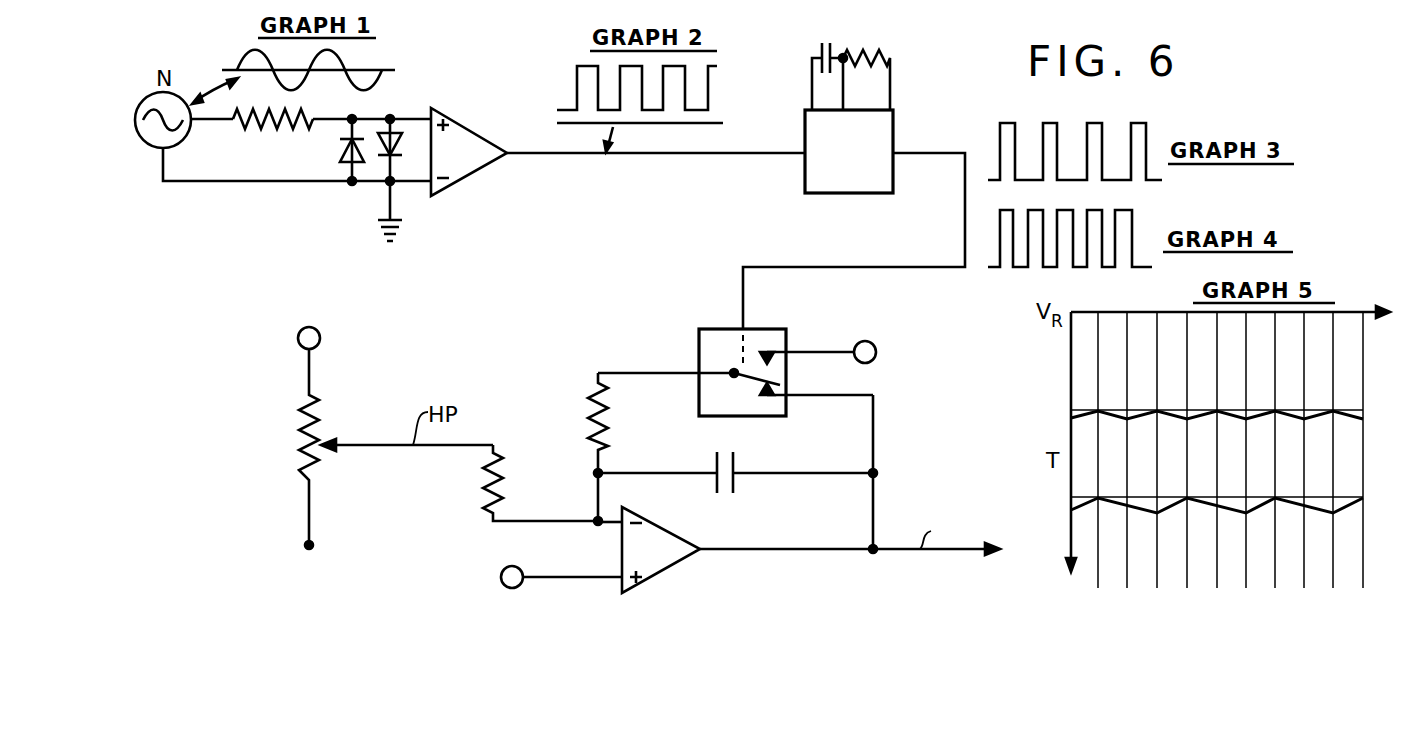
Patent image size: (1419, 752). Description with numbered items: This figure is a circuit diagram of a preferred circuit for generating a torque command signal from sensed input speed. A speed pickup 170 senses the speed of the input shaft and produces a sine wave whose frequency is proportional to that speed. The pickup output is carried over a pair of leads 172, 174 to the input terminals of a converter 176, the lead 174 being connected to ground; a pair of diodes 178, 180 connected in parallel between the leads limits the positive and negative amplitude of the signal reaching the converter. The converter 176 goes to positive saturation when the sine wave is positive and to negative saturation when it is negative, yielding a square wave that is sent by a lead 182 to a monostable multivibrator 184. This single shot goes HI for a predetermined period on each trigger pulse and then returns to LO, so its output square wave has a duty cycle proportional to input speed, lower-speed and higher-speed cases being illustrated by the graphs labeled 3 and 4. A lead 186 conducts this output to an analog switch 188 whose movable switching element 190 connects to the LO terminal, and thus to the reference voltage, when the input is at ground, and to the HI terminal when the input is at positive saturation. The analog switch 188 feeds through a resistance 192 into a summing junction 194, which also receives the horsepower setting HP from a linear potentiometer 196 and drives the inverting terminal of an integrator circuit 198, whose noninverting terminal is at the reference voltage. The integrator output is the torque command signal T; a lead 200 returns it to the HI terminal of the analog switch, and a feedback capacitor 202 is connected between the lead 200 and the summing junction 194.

The speed pickup 170 is at (124, 119).
The lead 172 is at (198, 122).
The lead 174 is at (284, 183).
The converter 176 is at (467, 123).
The diode 178 is at (340, 148).
The diode 180 is at (398, 145).
The lead 182 is at (681, 153).
The monostable multivibrator 184 is at (834, 193).
The lead 186 is at (812, 267).
The analog switch 188 is at (708, 329).
The movable switching element 190 is at (757, 377).
The resistance 192 is at (584, 408).
The summing junction 194 is at (594, 519).
The linear potentiometer 196 is at (282, 435).
The integrator circuit 198 is at (655, 578).
The lead 200 is at (874, 445).
The feedback capacitor 202 is at (750, 457).
The waveform corresponding to graph 3 is at (1224, 508).
The waveform corresponding to graph 4 is at (1195, 412).